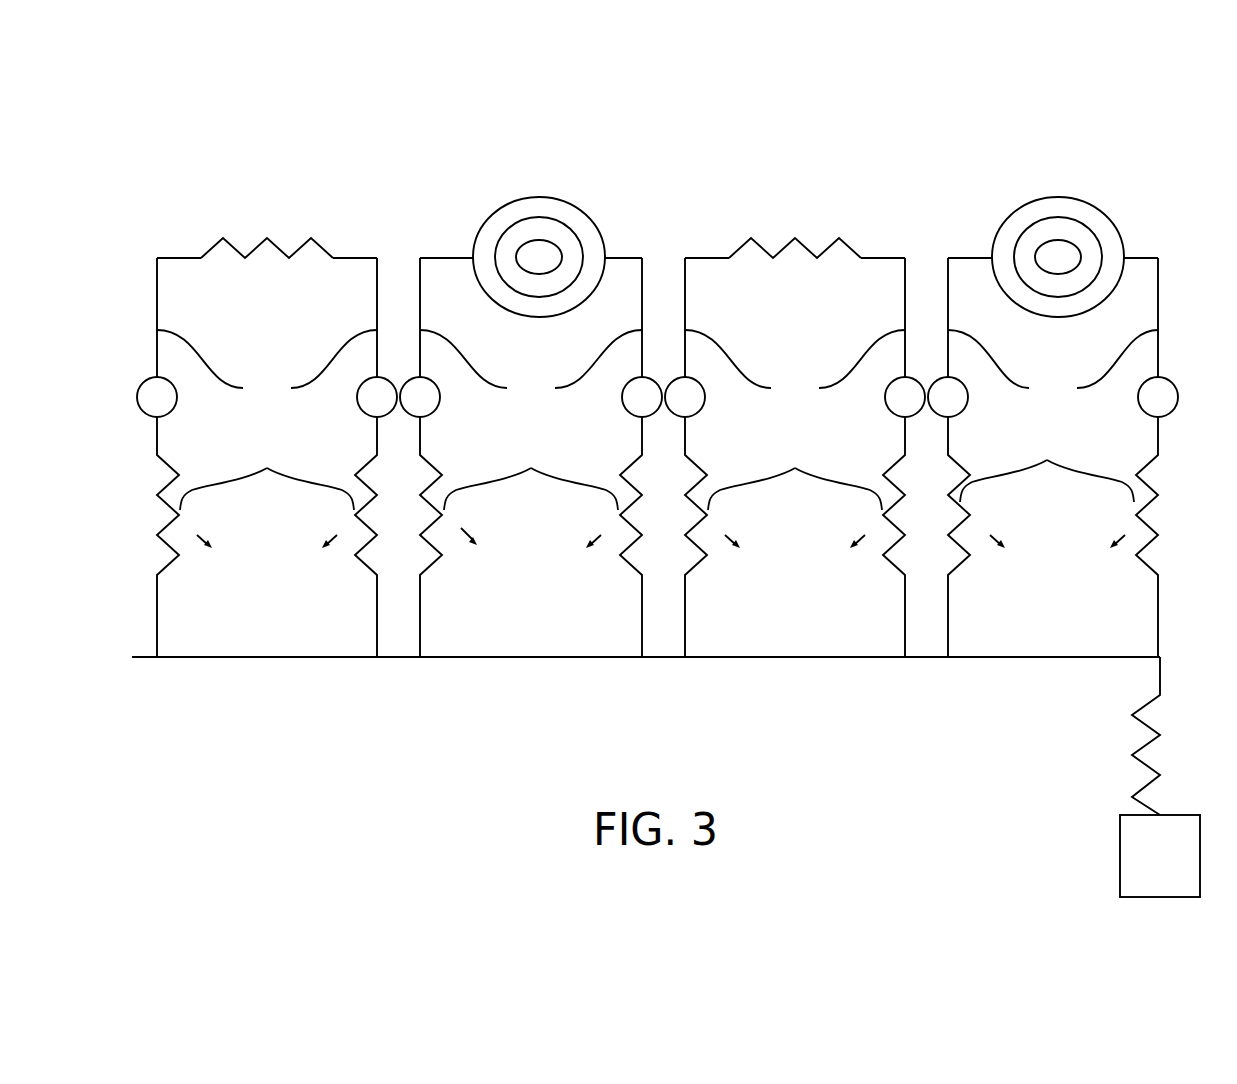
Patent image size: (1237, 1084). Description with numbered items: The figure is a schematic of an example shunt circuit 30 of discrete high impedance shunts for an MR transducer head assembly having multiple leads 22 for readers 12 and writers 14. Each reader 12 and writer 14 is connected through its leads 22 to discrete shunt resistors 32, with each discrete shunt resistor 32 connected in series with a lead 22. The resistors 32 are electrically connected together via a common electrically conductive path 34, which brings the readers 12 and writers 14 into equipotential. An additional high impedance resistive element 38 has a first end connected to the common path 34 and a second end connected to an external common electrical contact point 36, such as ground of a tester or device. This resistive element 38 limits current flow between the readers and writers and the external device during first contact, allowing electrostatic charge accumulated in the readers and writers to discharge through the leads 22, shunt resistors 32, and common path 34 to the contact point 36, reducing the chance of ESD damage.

The shunt circuit 30 is at (308, 89).
The reader 12 is at (255, 248).
The writer 14 is at (489, 218).
The lead 22 is at (657, 367).
The discrete shunt resistor 32 is at (657, 499).
The common electrically conductive path 34 is at (800, 665).
The external common electrical contact point 36 is at (1120, 857).
The additional high impedance resistive element 38 is at (1130, 757).